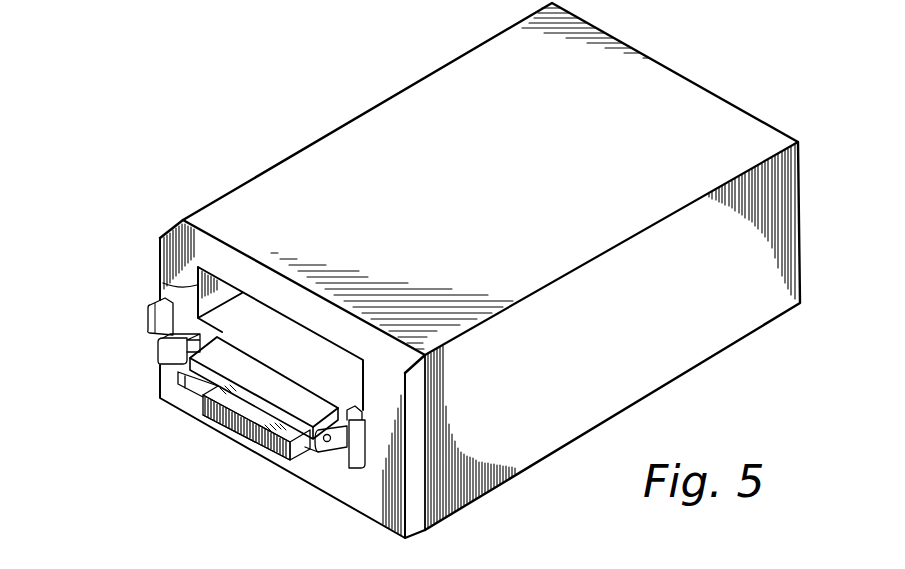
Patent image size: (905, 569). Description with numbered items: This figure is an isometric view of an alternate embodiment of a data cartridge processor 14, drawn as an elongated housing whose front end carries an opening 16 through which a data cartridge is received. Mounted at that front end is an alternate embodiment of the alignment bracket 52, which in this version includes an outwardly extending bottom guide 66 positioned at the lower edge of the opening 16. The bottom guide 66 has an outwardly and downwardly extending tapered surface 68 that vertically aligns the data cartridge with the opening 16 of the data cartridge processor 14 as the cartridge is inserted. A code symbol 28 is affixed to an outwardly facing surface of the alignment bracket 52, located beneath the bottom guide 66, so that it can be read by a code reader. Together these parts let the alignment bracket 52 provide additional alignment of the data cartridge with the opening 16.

The data cartridge processor 14 is at (378, 108).
The opening 16 is at (163, 283).
The alignment bracket 52 is at (158, 349).
The bottom guide 66 is at (193, 405).
The tapered surface 68 is at (270, 377).
The code symbol 28 is at (233, 433).